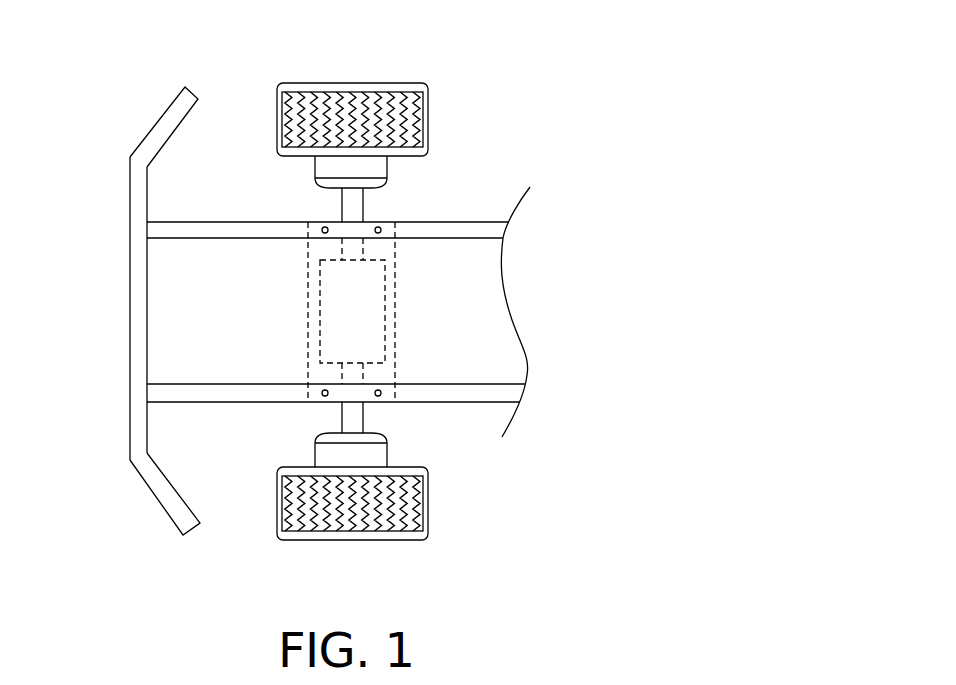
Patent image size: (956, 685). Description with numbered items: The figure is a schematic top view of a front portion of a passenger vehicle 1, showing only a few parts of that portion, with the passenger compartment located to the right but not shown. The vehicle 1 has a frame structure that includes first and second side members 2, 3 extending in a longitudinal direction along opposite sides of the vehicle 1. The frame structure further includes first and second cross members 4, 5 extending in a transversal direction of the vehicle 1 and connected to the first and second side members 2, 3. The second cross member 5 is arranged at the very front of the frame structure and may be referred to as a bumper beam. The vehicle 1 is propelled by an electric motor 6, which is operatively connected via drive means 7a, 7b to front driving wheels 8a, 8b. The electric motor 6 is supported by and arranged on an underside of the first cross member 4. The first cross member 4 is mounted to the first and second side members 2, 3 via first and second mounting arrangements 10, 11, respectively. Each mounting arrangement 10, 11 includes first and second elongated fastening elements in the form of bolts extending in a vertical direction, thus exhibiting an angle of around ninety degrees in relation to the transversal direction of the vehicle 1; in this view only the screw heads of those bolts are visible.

The passenger vehicle 1 is at (542, 67).
The first side member 2 is at (477, 231).
The second side member 3 is at (478, 392).
The first cross member 4 is at (327, 375).
The second cross member 5 is at (130, 322).
The electric motor 6 is at (350, 310).
The drive means 7a is at (340, 419).
The drive means 7b is at (340, 203).
The front driving wheel 8a is at (355, 540).
The front driving wheel 8b is at (353, 83).
The first mounting arrangement 10 is at (382, 227).
The second mounting arrangement 11 is at (382, 397).